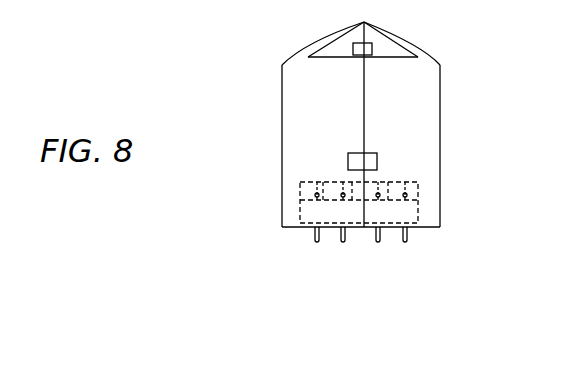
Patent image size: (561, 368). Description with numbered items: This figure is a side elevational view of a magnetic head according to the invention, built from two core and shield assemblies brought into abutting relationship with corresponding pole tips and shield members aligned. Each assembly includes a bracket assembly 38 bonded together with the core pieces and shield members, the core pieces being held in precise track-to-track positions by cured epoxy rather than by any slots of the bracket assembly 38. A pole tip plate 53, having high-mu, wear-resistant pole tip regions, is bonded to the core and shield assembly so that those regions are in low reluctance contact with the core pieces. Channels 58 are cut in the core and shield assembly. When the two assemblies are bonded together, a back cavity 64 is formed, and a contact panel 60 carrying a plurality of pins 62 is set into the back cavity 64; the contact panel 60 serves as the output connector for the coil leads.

The bracket assembly 38 is at (283, 122).
The pole tip plate 53 is at (417, 52).
The channels 58 is at (371, 44).
The contact panel 60 is at (300, 220).
The pins 62 is at (408, 236).
The back cavity 64 is at (418, 193).